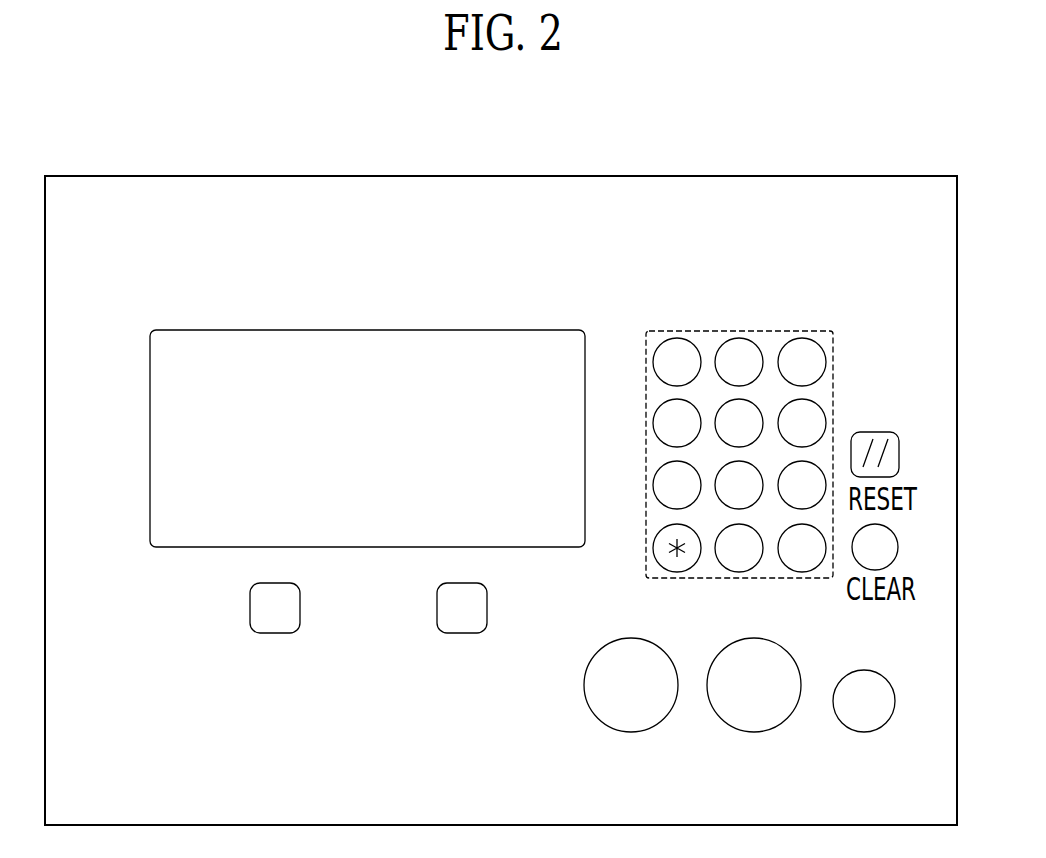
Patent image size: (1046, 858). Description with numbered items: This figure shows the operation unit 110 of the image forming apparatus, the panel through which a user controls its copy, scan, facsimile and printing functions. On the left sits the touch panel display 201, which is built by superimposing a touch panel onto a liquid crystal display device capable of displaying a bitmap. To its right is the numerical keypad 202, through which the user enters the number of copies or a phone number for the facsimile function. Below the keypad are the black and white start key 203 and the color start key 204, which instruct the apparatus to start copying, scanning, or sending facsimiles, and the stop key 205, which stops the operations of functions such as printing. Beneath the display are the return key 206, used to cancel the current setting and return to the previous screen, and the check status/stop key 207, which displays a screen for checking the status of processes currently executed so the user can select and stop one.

The operation unit 110 is at (770, 176).
The touch panel display 201 is at (380, 330).
The numerical keypad 202 is at (748, 331).
The black and white start key 203 is at (693, 638).
The color start key 204 is at (798, 658).
The stop key 205 is at (915, 664).
The return key 206 is at (300, 608).
The check status/stop key 207 is at (487, 608).